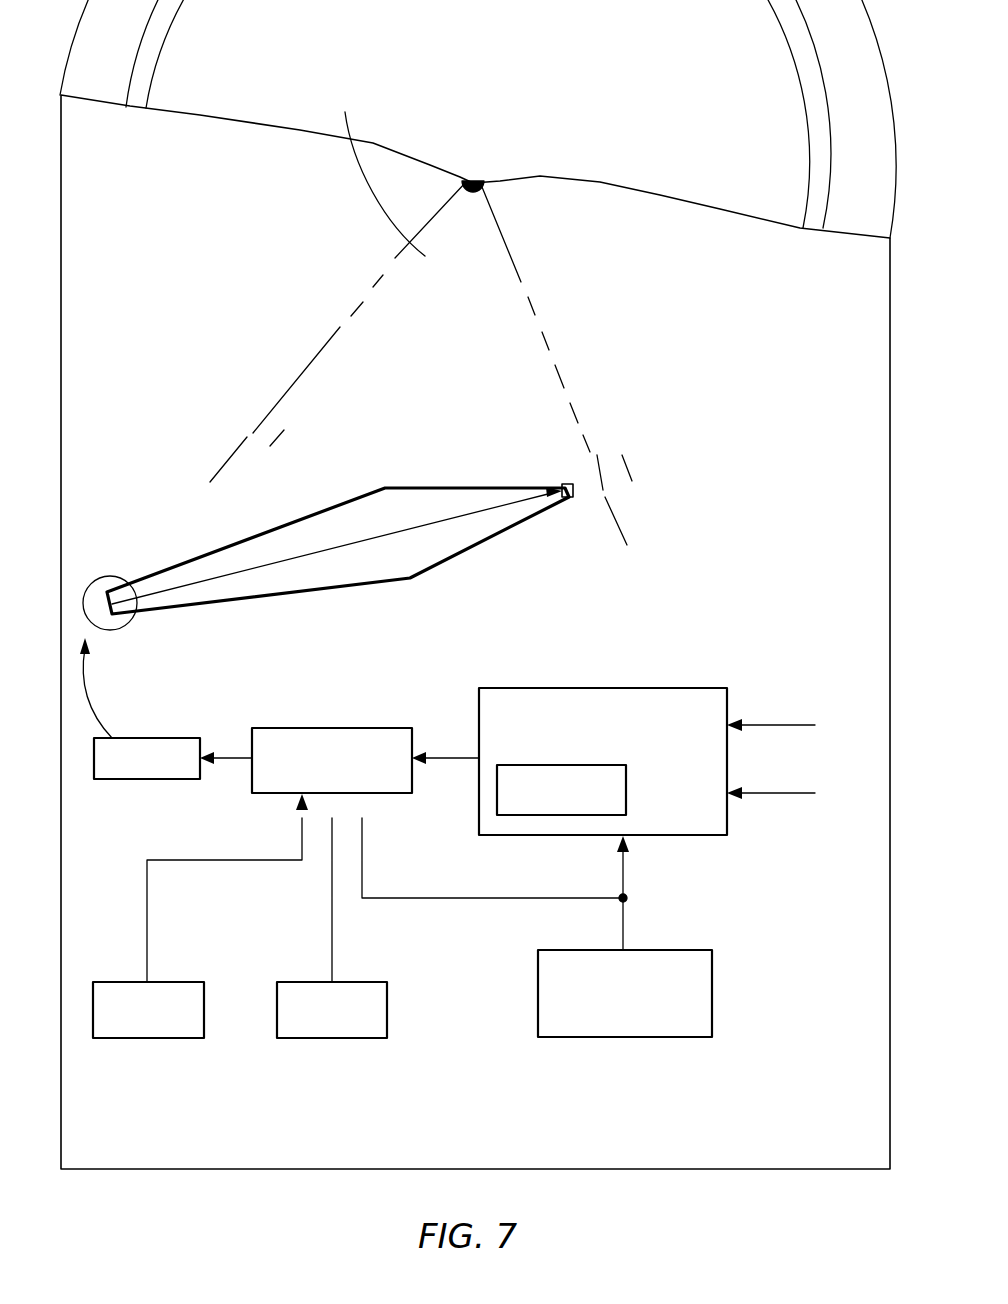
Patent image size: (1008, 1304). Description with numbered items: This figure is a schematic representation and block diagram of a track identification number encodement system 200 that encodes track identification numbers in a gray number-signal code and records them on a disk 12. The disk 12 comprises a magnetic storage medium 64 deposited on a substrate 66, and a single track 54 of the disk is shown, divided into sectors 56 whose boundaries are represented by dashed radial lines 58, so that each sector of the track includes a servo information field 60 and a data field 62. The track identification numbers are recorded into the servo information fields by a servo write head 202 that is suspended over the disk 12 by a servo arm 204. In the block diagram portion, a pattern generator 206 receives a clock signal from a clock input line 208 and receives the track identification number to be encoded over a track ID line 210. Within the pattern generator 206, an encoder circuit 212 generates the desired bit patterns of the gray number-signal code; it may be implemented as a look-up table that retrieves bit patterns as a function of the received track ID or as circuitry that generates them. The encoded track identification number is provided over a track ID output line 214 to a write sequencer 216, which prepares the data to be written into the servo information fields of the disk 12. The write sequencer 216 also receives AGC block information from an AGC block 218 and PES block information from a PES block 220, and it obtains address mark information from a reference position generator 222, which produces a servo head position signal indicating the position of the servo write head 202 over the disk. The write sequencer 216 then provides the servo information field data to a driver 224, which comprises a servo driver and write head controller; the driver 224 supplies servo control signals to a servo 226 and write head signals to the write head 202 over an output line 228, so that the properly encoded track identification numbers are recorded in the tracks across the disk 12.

The track identification number encodement system 200 is at (92, 74).
The disk 12 is at (478, 303).
The servo track 54 is at (728, 378).
The sectors 56 is at (377, 178).
The dashed radial lines 58 is at (518, 268).
The servo information field 60 is at (266, 430).
The data field 62 is at (292, 444).
The magnetic storage medium 64 is at (860, 290).
The substrate 66 is at (826, 397).
The servo write head 202 is at (567, 483).
The servo arm 204 is at (433, 487).
The pattern generator 206 is at (588, 687).
The clock input line 208 is at (772, 724).
The track ID line 210 is at (768, 800).
The encoder circuit 212 is at (628, 782).
The track ID output line 214 is at (452, 757).
The write sequencer 216 is at (358, 727).
The AGC block 218 is at (332, 1040).
The PES block 220 is at (152, 1040).
The reference position generator 222 is at (622, 1040).
The driver 224 is at (140, 781).
The servo 226 is at (100, 577).
The output line 228 is at (96, 694).